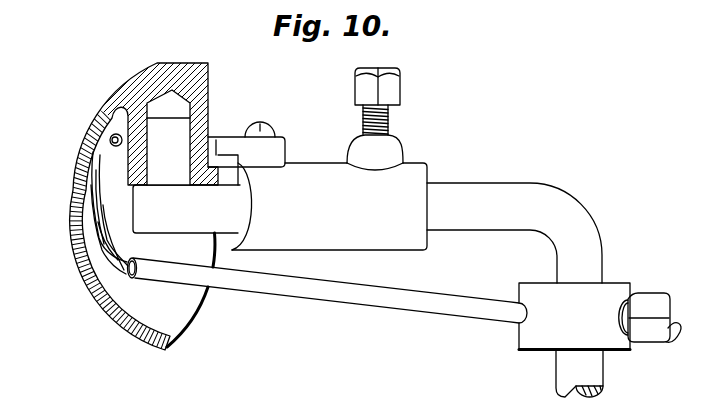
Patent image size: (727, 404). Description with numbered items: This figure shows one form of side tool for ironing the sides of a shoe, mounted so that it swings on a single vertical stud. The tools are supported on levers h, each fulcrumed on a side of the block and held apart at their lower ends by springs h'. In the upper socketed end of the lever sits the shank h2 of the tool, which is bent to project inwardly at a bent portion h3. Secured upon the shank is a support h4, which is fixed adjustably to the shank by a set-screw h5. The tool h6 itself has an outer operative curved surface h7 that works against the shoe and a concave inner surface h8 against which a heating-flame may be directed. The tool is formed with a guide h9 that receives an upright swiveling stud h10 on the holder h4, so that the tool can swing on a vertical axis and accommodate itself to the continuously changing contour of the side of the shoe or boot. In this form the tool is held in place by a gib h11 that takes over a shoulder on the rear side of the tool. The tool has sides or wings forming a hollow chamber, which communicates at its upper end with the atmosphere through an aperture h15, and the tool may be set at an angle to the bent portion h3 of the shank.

The lever h is at (327, 299).
The spring h' is at (600, 316).
The shank h2 is at (587, 373).
The bent portion of the shank h3 is at (514, 233).
The support h4 is at (306, 195).
The set-screw h5 is at (389, 122).
The tool h6 is at (78, 185).
The outer operative curved surface h7 is at (72, 245).
The concave inner surface h8 is at (118, 299).
The guide h9 is at (193, 108).
The swiveling stud h10 is at (186, 175).
The gib h11 is at (272, 126).
The aperture h15 is at (110, 137).